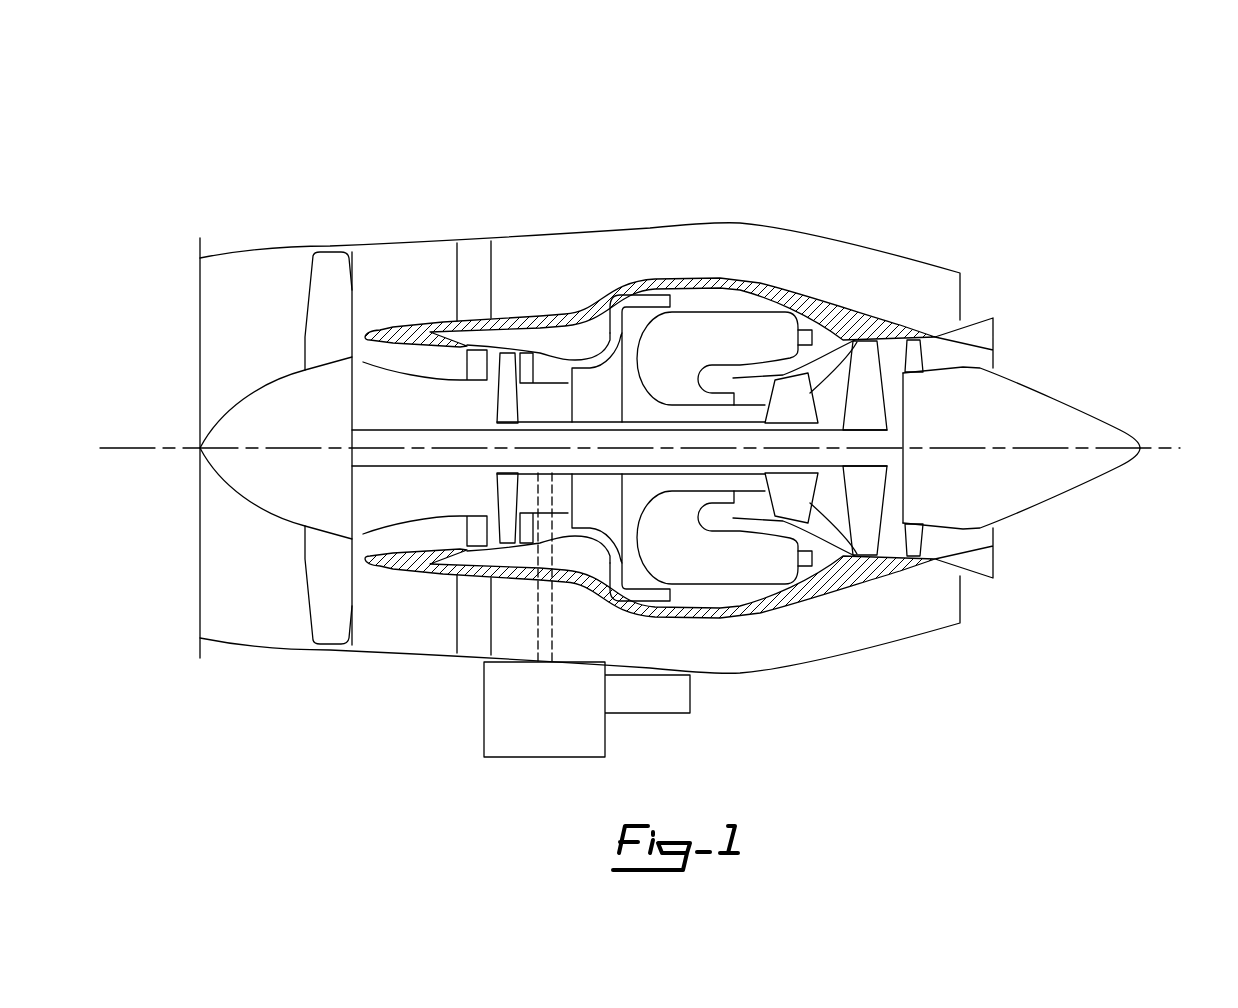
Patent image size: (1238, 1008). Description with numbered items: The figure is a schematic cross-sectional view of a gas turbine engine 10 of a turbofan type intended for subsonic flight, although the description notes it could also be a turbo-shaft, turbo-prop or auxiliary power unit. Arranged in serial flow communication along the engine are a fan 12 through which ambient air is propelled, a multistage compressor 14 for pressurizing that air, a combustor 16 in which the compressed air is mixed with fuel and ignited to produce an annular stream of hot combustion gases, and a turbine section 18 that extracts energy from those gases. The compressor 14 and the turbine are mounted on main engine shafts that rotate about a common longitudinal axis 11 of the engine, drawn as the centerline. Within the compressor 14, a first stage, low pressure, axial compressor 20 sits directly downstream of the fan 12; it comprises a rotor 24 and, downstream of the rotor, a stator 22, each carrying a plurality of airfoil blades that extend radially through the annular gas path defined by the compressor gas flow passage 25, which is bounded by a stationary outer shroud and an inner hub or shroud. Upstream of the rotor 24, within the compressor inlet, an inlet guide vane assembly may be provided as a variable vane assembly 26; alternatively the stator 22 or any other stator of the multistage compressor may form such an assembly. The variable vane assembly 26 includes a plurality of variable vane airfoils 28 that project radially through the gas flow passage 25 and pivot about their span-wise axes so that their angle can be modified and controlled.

The gas turbine engine 10 is at (845, 170).
The longitudinal axis 11 is at (1172, 448).
The fan 12 is at (322, 578).
The multistage compressor 14 is at (557, 370).
The combustor 16 is at (718, 330).
The turbine section 18 is at (828, 503).
The first stage axial compressor 20 is at (519, 347).
The stator 22 is at (545, 520).
The rotor 24 is at (493, 540).
The compressor gas flow passage 25 is at (493, 345).
The variable vane assembly 26 is at (470, 357).
The variable vane airfoils 28 is at (458, 540).